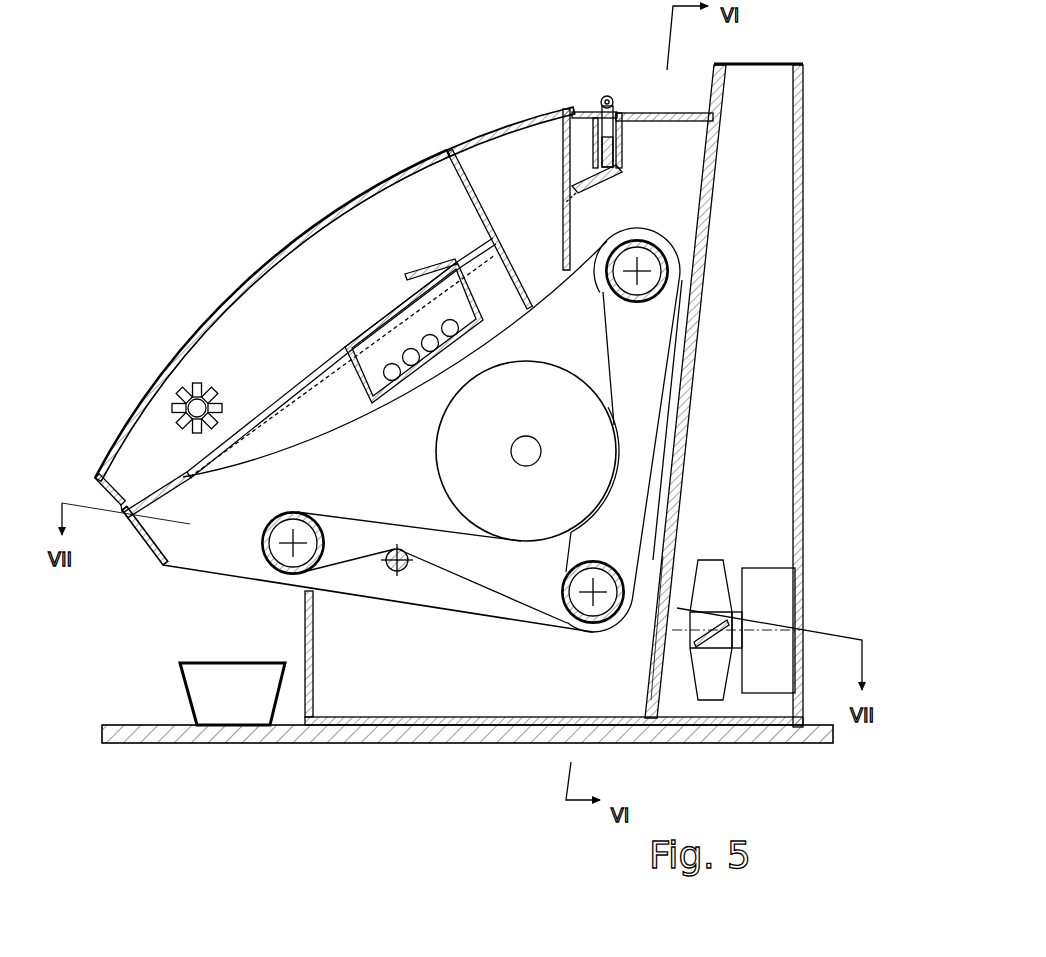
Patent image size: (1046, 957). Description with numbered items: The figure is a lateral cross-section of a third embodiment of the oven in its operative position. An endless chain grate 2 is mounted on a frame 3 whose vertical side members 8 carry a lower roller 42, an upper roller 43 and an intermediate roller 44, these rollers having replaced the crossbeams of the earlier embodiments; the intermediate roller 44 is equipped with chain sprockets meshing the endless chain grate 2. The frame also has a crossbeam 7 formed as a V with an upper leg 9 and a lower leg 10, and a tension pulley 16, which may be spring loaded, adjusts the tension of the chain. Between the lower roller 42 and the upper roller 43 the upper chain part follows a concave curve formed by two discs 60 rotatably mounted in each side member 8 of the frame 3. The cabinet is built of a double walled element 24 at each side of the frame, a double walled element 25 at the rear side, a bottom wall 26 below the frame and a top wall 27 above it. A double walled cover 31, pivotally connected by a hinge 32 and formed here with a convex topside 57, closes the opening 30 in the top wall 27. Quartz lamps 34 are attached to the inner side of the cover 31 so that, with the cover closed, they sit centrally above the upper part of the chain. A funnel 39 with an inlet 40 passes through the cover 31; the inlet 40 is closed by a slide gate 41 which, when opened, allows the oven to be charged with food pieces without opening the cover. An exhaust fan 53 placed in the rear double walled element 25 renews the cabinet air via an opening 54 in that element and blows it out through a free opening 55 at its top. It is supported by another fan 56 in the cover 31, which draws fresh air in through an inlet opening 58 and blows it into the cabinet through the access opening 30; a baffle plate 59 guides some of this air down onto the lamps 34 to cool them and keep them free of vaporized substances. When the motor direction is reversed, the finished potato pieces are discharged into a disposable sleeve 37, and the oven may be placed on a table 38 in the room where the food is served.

The endless chain grate 2 is at (541, 322).
The frame 3 is at (218, 575).
The crossbeam 7 is at (121, 516).
The side member 8 is at (290, 499).
The upper leg 9 is at (168, 497).
The lower leg 10 is at (155, 560).
The tension pulley 16 is at (389, 572).
The double walled element 24 is at (488, 702).
The double walled element 25 is at (757, 402).
The bottom wall 26 is at (430, 702).
The top wall 27 is at (647, 123).
The opening 30 is at (288, 406).
The double walled cover 31 is at (210, 315).
The hinge 32 is at (606, 96).
The quartz lamp 34 is at (410, 350).
The disposable sleeve 37 is at (202, 702).
The table 38 is at (309, 745).
The funnel 39 is at (535, 212).
The inlet 40 is at (532, 140).
The slide gate 41 is at (462, 150).
The lower roller 42 is at (265, 528).
The upper roller 43 is at (654, 240).
The intermediate roller 44 is at (584, 630).
The exhaust fan 53 is at (780, 607).
The opening 54 is at (657, 663).
The free opening 55 is at (757, 72).
The fan 56 is at (190, 410).
The convex topside 57 is at (324, 223).
The inlet opening 58 is at (113, 490).
The baffle plate 59 is at (413, 270).
The disc 60 is at (445, 464).